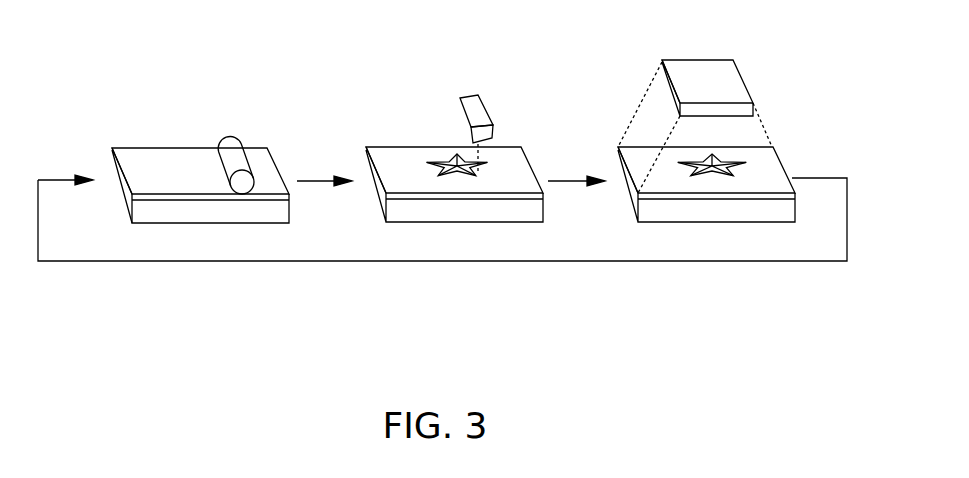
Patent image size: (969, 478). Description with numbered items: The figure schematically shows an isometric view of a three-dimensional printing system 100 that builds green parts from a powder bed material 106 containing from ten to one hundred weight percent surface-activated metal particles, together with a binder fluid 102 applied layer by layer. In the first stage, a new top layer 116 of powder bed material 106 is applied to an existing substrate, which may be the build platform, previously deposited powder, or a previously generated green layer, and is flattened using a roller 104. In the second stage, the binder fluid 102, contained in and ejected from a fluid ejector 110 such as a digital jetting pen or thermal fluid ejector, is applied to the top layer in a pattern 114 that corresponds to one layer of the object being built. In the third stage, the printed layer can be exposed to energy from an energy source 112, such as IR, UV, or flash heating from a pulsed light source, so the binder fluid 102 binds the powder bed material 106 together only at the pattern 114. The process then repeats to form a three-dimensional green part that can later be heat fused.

The three-dimensional printing system 100 is at (156, 77).
The binder fluid 102 is at (482, 155).
The roller 104 is at (232, 148).
The powder bed material 106 is at (195, 207).
The fluid ejector 110 is at (477, 115).
The energy source 112 is at (687, 91).
The pattern 114 is at (457, 150).
The top layer 116 is at (117, 175).